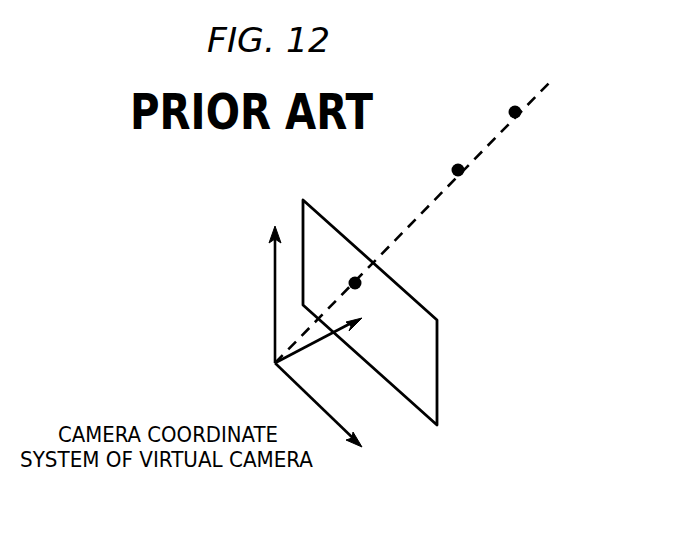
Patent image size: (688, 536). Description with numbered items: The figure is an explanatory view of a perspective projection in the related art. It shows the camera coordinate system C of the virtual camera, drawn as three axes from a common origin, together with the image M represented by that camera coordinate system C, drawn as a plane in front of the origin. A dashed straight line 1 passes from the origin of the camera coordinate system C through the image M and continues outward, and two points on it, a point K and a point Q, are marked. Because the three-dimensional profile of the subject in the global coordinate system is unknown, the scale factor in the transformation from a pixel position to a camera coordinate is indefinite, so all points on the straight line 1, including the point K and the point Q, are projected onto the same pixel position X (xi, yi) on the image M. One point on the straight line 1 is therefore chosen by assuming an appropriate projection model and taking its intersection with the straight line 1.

The straight line 1 is at (424, 209).
The camera coordinate system of the virtual camera C is at (307, 336).
The image M is at (437, 372).
The pixel position X is at (355, 283).
The point K is at (468, 185).
The point Q is at (529, 125).